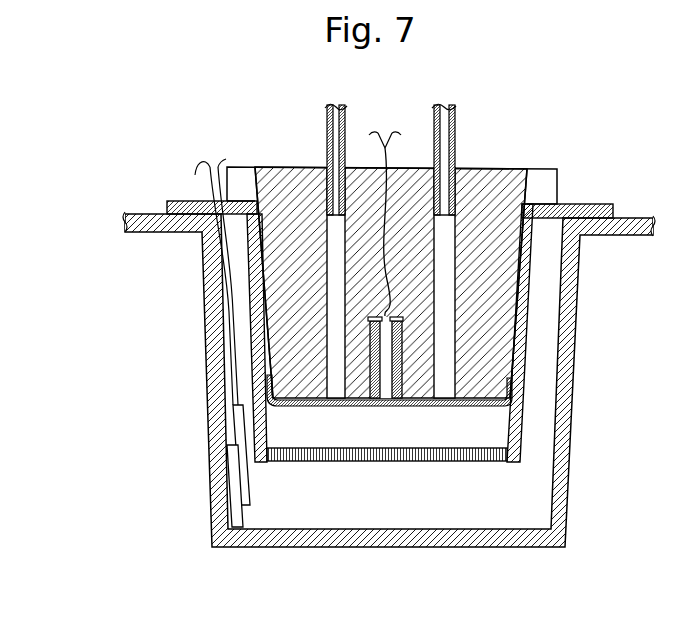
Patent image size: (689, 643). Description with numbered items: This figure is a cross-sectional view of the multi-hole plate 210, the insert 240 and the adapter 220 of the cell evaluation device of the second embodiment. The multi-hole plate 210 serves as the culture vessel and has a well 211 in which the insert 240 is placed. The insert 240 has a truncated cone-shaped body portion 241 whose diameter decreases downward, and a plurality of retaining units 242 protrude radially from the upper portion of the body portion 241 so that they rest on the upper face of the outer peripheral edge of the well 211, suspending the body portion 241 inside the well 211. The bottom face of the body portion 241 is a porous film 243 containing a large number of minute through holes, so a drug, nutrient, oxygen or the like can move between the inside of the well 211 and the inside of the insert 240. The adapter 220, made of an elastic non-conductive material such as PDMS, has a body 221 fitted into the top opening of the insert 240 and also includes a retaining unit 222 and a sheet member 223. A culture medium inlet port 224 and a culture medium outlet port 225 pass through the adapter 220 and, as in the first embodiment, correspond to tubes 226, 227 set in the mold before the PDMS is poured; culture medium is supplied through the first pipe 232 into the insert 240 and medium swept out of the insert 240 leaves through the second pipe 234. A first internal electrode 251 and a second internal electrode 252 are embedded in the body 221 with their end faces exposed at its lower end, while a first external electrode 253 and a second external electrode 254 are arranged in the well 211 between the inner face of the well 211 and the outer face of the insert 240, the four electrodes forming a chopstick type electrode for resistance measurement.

The multi-hole plate 210 is at (389, 379).
The well 211 is at (570, 482).
The adapter 220 is at (400, 336).
The body 221 is at (495, 355).
The retaining unit 222 is at (557, 178).
The sheet member 223 is at (512, 392).
The culture medium inlet port 224 is at (330, 247).
The culture medium outlet port 225 is at (488, 235).
The crucible side wall 226 is at (326, 218).
The second bore 227 is at (457, 210).
The first pipe 232 is at (345, 123).
The second pipe 234 is at (455, 123).
The insert 240 is at (390, 360).
The body portion 241 is at (523, 418).
The retaining units 242 is at (602, 203).
The porous film 243 is at (455, 462).
The first internal electrode 251 is at (372, 400).
The second internal electrode 252 is at (396, 400).
The first external electrode 253 is at (240, 422).
The second external electrode 254 is at (235, 500).